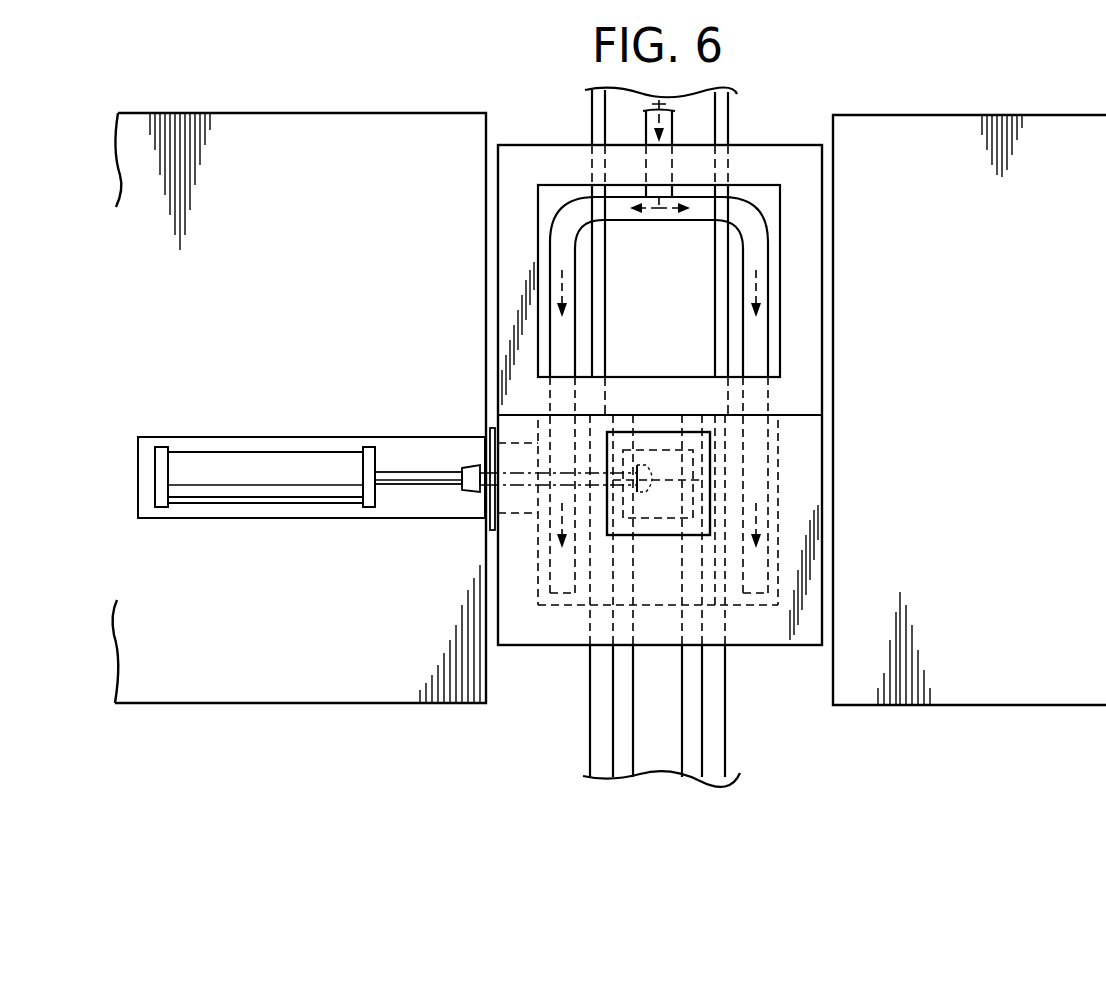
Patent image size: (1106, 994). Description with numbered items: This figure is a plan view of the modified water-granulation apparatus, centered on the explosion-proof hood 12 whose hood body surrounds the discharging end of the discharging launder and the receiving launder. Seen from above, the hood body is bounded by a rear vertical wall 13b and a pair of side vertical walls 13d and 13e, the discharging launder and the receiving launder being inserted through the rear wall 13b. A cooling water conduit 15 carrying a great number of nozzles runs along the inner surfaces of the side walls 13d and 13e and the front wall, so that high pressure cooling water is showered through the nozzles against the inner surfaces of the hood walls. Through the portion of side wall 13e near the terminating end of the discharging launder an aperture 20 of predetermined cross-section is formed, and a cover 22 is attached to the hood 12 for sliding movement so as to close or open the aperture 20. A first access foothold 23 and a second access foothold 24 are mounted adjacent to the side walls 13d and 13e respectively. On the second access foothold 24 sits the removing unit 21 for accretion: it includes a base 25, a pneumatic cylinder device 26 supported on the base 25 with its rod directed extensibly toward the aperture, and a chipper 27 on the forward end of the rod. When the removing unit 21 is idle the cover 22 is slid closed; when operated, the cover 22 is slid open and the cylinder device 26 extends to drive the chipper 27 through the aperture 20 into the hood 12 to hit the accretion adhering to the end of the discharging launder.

The explosion-proof hood 12 is at (494, 217).
The rear vertical wall 13b is at (543, 638).
The side vertical wall 13d is at (803, 298).
The side vertical wall 13e is at (512, 305).
The cooling water conduit 15 is at (768, 247).
The aperture 20 is at (480, 497).
The removing unit 21 is at (147, 422).
The cover 22 is at (490, 448).
The first access foothold 23 is at (853, 712).
The second access foothold 24 is at (392, 710).
The base 25 is at (230, 520).
The pneumatic cylinder device 26 is at (267, 463).
The chipper 27 is at (468, 465).